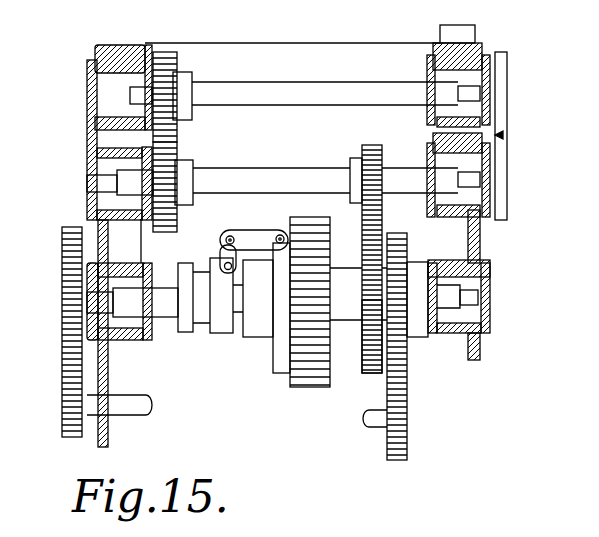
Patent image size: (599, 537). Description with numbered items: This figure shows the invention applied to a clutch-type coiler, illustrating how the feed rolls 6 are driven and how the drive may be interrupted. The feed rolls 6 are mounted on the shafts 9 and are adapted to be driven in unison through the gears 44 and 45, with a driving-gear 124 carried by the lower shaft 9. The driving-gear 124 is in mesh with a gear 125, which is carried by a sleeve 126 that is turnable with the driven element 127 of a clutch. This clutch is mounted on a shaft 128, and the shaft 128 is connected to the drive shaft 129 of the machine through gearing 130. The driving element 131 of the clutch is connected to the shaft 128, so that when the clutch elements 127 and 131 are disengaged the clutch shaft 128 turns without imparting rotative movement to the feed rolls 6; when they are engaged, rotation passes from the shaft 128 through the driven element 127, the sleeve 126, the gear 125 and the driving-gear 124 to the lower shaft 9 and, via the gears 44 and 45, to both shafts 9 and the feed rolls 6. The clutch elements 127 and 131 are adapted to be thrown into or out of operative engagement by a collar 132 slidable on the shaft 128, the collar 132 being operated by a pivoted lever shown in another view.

The gear 44 is at (174, 54).
The gear 45 is at (180, 224).
The shaft 9 is at (268, 96).
The driving-gear 124 is at (375, 147).
The gear 125 is at (367, 375).
The sleeve 126 is at (342, 321).
The driven element 127 is at (303, 375).
The shaft 128 is at (169, 308).
The drive shaft 129 is at (372, 428).
The gearing 130 is at (408, 422).
The driving element 131 is at (255, 334).
The collar 132 is at (184, 263).
The feed roll 6 is at (504, 147).